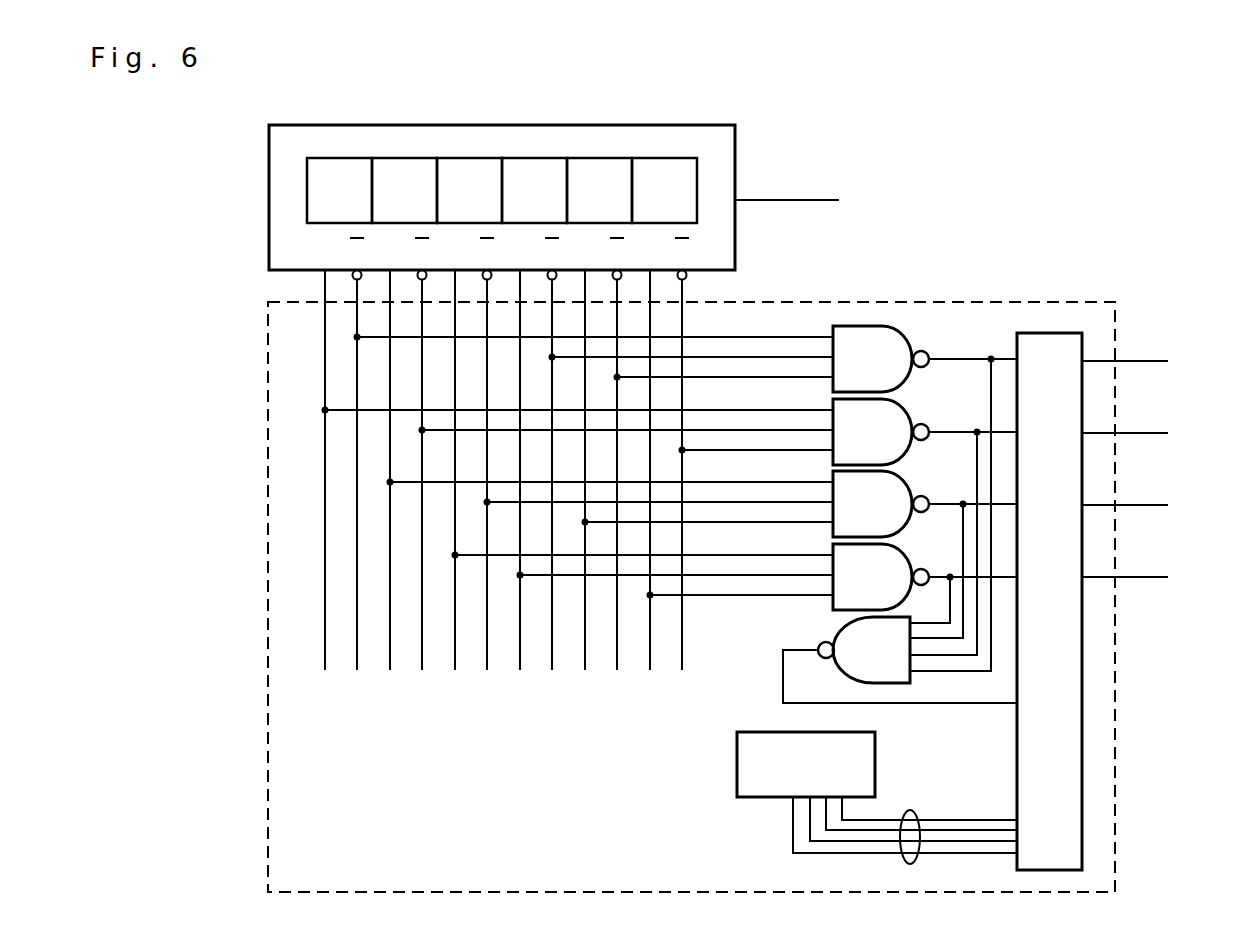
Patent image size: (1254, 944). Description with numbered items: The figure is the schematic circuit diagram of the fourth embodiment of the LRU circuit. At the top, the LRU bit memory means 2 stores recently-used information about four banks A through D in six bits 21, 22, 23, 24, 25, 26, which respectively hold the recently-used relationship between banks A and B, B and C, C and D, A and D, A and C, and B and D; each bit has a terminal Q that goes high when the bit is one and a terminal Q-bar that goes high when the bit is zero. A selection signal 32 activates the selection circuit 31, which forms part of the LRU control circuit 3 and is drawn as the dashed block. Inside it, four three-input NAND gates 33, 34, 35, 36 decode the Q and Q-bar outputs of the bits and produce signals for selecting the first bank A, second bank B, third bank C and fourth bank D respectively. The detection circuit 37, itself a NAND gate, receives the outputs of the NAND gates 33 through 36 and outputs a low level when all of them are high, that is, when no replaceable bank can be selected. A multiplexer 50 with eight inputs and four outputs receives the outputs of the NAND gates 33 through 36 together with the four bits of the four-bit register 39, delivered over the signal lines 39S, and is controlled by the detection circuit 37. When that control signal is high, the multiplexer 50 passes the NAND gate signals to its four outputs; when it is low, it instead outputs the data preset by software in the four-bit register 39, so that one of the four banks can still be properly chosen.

The LRU bit memory means 2 is at (722, 122).
The bit 21 is at (346, 158).
The bit 22 is at (411, 158).
The bit 23 is at (475, 158).
The bit 24 is at (540, 158).
The bit 25 is at (606, 158).
The bit 26 is at (670, 158).
The LRU control circuit 3 is at (736, 565).
The selection circuit 31 is at (278, 750).
The selection signal 32 is at (806, 200).
The NAND gate 33 is at (890, 335).
The NAND gate 34 is at (897, 410).
The NAND gate 35 is at (893, 484).
The NAND gate 36 is at (888, 560).
The detection circuit 37 is at (850, 626).
The 4-bit register 39 is at (737, 760).
The signal lines 39S is at (905, 860).
The multiplexer 50 is at (1017, 775).